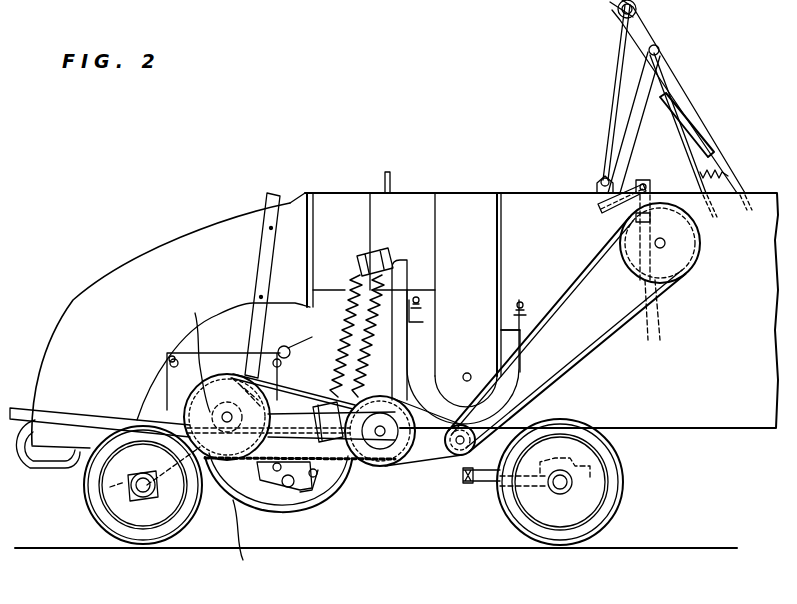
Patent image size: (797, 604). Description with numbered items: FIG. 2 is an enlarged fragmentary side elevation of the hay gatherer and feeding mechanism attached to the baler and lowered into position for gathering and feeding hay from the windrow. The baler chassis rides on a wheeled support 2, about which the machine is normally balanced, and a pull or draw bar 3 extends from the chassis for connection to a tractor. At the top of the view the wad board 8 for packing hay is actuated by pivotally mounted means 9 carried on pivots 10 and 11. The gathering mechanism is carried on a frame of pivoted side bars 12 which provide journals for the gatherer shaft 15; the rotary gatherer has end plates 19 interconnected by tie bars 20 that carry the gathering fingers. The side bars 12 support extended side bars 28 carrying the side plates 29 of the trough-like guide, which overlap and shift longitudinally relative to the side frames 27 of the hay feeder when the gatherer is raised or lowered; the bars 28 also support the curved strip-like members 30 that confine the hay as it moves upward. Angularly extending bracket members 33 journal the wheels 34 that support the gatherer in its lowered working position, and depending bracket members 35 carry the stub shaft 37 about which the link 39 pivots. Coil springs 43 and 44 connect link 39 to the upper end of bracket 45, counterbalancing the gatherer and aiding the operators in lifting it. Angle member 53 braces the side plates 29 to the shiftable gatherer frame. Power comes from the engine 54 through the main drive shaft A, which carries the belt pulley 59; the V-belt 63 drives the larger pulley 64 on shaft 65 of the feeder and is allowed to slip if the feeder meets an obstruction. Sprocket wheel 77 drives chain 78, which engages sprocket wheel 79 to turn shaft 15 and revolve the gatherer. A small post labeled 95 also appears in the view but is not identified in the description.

The wheeled support 2 is at (597, 502).
The pull or draw bar 3 is at (483, 481).
The wad board 8 is at (713, 163).
The pivotally mounted means 9 is at (633, 113).
The pivot 10 is at (597, 182).
The pivot 11 is at (600, 211).
The side bars 12 is at (268, 406).
The gatherer shaft 15 is at (205, 397).
The end plates 19 is at (167, 387).
The tie bars 20 is at (178, 358).
The trough-like guide 27 is at (335, 212).
The extended side bars 28 is at (67, 423).
The side plates 29 is at (136, 262).
The curved strip-like members 30 is at (36, 470).
The angularly extending bracket members 33 is at (252, 543).
The wheels 34 is at (143, 542).
The bracket members 35 is at (307, 493).
The stub shaft 37 is at (327, 483).
The link 39 is at (325, 412).
The coil spring 43 is at (362, 371).
The coil spring 44 is at (341, 330).
The bracket 45 is at (383, 258).
The angle member 53 is at (268, 208).
The engine 54 is at (513, 330).
The belt pulley 59 is at (462, 455).
The V-belt 63 is at (580, 363).
The larger pulley 64 is at (690, 250).
The shaft 65 is at (663, 252).
The sprocket wheel 77 is at (387, 463).
The chain 78 is at (278, 505).
The sprocket wheel 79 is at (198, 312).
The post 95 is at (396, 180).
The main drive shaft A is at (455, 449).